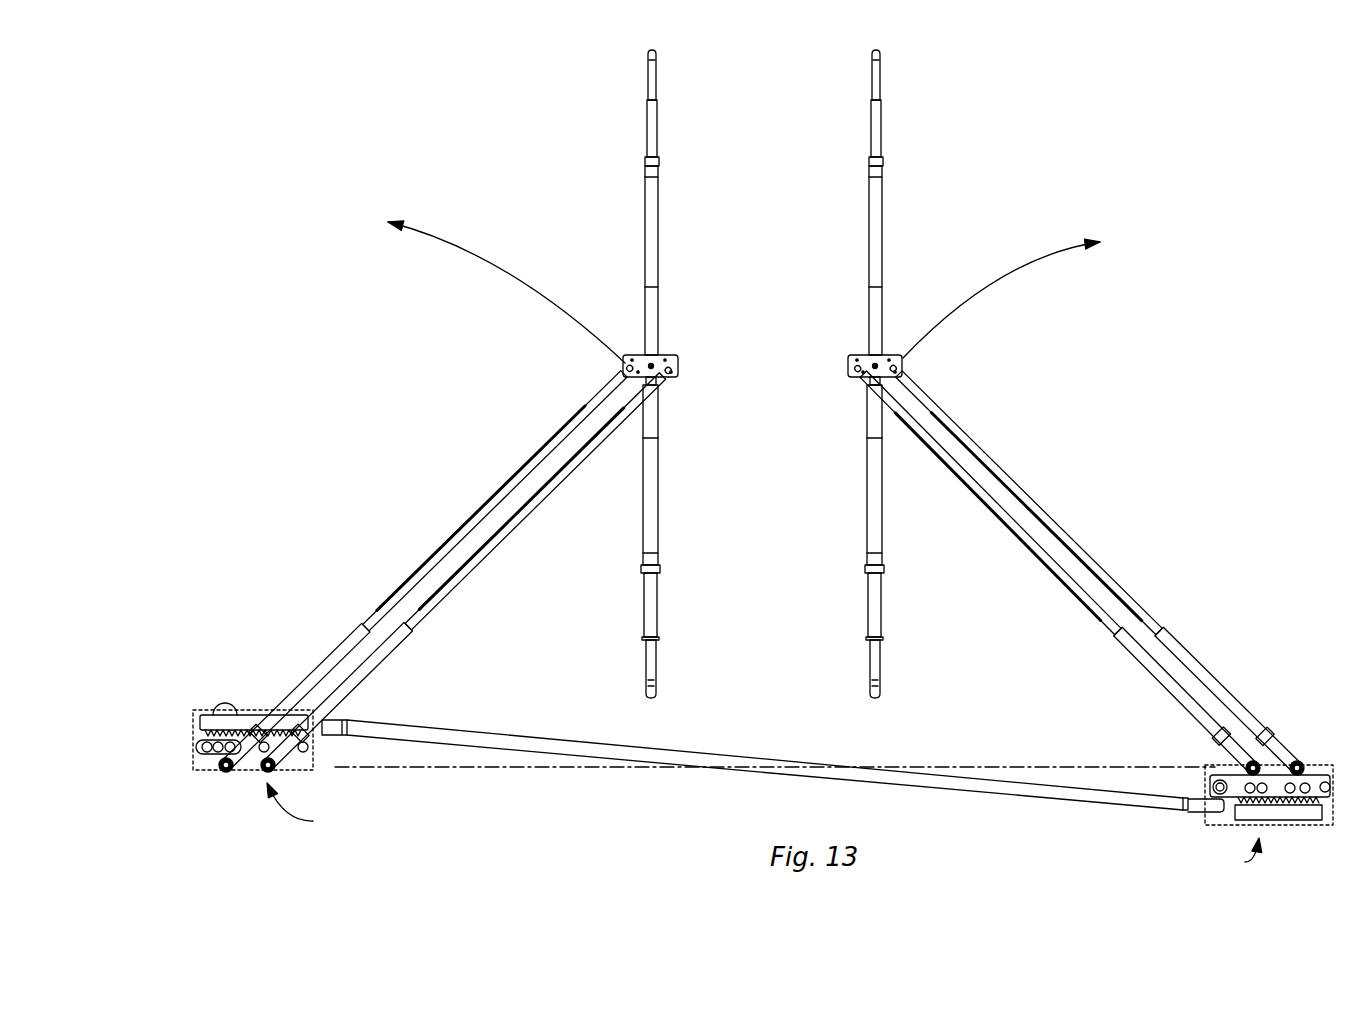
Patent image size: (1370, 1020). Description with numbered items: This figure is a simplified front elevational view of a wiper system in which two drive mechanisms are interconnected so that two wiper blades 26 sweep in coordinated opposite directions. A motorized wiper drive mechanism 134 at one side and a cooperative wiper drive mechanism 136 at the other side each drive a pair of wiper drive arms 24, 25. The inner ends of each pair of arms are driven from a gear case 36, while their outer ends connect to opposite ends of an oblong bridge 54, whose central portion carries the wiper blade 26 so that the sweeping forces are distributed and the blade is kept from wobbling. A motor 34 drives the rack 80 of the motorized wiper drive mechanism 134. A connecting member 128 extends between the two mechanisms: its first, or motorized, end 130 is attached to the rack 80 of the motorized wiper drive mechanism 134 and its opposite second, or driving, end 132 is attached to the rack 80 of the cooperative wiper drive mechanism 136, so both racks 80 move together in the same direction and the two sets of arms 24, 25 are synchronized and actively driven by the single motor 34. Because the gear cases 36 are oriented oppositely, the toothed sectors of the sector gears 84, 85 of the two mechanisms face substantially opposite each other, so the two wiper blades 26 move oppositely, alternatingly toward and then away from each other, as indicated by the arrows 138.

The wiper drive arm 24 is at (350, 634).
The wiper drive arm 25 is at (380, 656).
The wiper blade 26 is at (653, 248).
The motor 34 is at (260, 712).
The gear case 36 is at (198, 772).
The bridge 54 is at (663, 358).
The rack 80 is at (218, 716).
The sector gear 84 is at (223, 757).
The sector gear 85 is at (280, 760).
The connecting member 128 is at (530, 742).
The motorized end 130 is at (338, 716).
The driving end 132 is at (1202, 808).
The motorized wiper drive mechanism 134 is at (304, 806).
The cooperative wiper drive mechanism 136 is at (1238, 852).
The arrows 138 is at (533, 290).